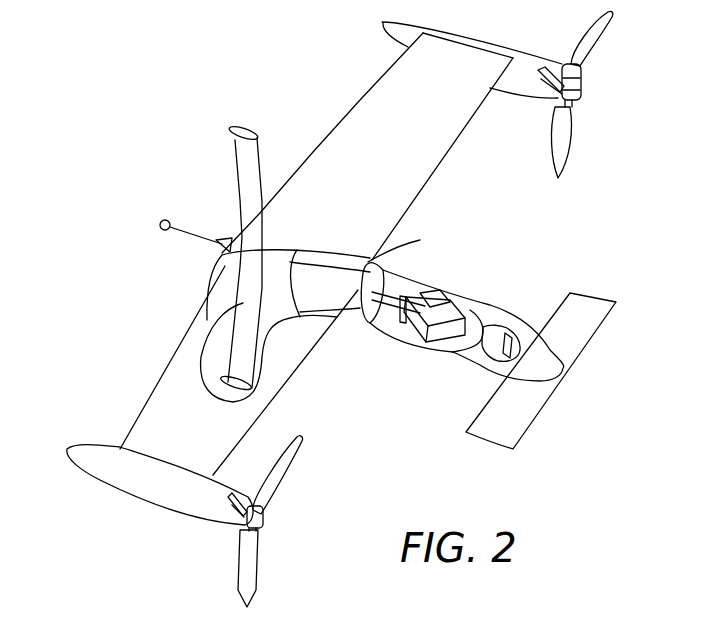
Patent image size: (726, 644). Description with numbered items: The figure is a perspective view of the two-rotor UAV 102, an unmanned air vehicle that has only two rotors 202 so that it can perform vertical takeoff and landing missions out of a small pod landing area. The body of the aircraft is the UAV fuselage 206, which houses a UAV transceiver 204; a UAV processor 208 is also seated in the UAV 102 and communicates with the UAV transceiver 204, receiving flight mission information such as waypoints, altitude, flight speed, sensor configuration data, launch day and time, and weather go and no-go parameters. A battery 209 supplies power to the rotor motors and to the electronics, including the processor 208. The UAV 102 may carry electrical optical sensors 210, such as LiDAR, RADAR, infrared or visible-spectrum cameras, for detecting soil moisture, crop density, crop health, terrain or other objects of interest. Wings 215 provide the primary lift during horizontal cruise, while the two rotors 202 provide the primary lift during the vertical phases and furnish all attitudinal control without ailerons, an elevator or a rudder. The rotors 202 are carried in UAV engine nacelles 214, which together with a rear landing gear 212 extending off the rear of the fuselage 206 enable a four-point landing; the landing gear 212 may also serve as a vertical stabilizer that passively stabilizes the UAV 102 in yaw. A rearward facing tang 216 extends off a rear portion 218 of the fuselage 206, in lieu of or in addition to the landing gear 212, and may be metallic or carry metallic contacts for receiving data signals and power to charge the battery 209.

The two-rotor UAV 102 is at (490, 306).
The rotors 202 is at (586, 59).
The UAV transceiver 204 is at (350, 316).
The UAV fuselage 206 is at (452, 348).
The UAV processor 208 is at (405, 335).
The battery 209 is at (332, 272).
The electrical optical (EO) sensors 210 is at (368, 264).
The rear landing gear 212 is at (243, 303).
The UAV engine nacelles 214 is at (383, 25).
The wings 215 is at (421, 163).
The rearward facing tang 216 is at (190, 230).
The rear portion 218 is at (218, 245).